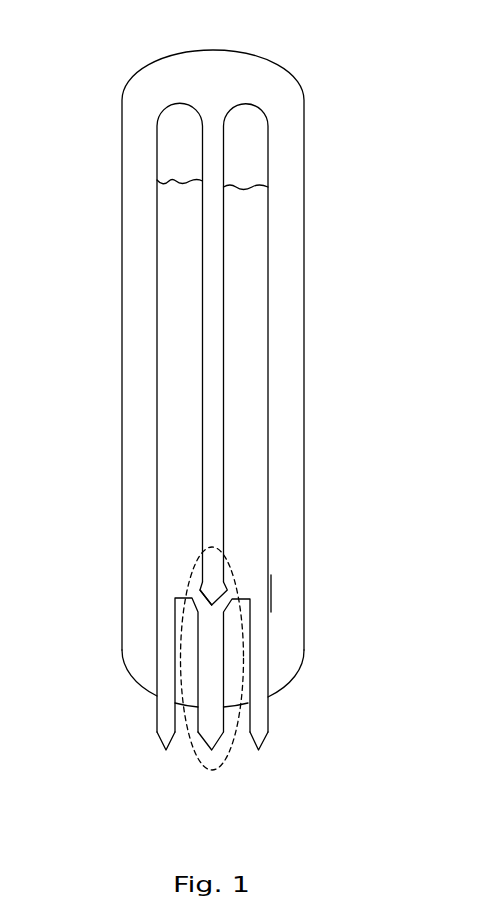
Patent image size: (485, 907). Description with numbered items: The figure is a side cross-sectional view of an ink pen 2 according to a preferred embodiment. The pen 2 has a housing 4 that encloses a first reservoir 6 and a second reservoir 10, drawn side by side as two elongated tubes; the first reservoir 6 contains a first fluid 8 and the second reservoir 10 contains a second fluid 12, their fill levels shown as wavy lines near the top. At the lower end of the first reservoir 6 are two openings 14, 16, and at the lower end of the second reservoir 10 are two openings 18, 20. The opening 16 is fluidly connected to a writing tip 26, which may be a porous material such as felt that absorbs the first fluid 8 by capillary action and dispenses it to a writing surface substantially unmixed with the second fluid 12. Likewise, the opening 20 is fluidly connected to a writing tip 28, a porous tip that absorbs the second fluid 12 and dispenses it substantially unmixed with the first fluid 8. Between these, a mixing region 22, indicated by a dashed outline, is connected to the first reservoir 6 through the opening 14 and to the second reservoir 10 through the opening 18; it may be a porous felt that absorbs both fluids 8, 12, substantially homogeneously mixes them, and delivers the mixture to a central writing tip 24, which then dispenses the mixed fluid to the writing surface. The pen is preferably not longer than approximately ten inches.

The pen 2 is at (333, 62).
The housing 4 is at (305, 400).
The first reservoir 6 is at (268, 213).
The first fluid 8 is at (245, 290).
The second reservoir 10 is at (157, 218).
The second fluid 12 is at (180, 306).
The opening 14 is at (230, 593).
The opening 16 is at (257, 600).
The opening 18 is at (197, 592).
The opening 20 is at (168, 599).
The mixing region 22 is at (208, 690).
The writing tip 24 is at (214, 737).
The writing tip 26 is at (260, 739).
The writing tip 28 is at (165, 739).